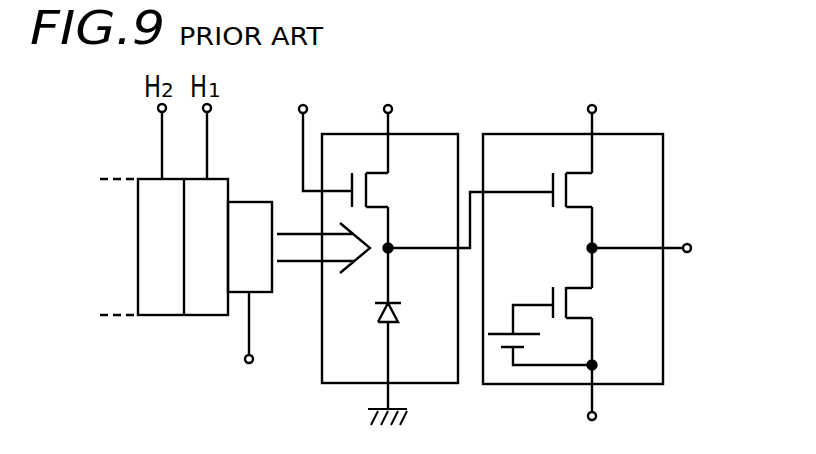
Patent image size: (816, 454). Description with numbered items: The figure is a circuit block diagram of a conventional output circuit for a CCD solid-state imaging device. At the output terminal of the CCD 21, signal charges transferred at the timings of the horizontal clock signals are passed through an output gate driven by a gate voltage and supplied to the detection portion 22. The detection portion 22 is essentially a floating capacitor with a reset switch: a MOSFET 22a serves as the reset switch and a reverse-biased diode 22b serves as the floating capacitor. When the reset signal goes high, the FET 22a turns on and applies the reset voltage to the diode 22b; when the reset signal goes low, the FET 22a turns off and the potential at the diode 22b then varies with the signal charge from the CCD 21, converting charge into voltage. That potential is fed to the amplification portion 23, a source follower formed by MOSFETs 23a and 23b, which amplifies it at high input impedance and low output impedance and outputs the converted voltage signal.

The CCD 21 is at (177, 334).
The detection portion 22 is at (426, 133).
The MOSFET 22a is at (402, 210).
The reverse-biased diode 22b is at (381, 318).
The amplification portion 23 is at (663, 163).
The MOSFET 23a is at (601, 210).
The MOSFET 23b is at (568, 306).